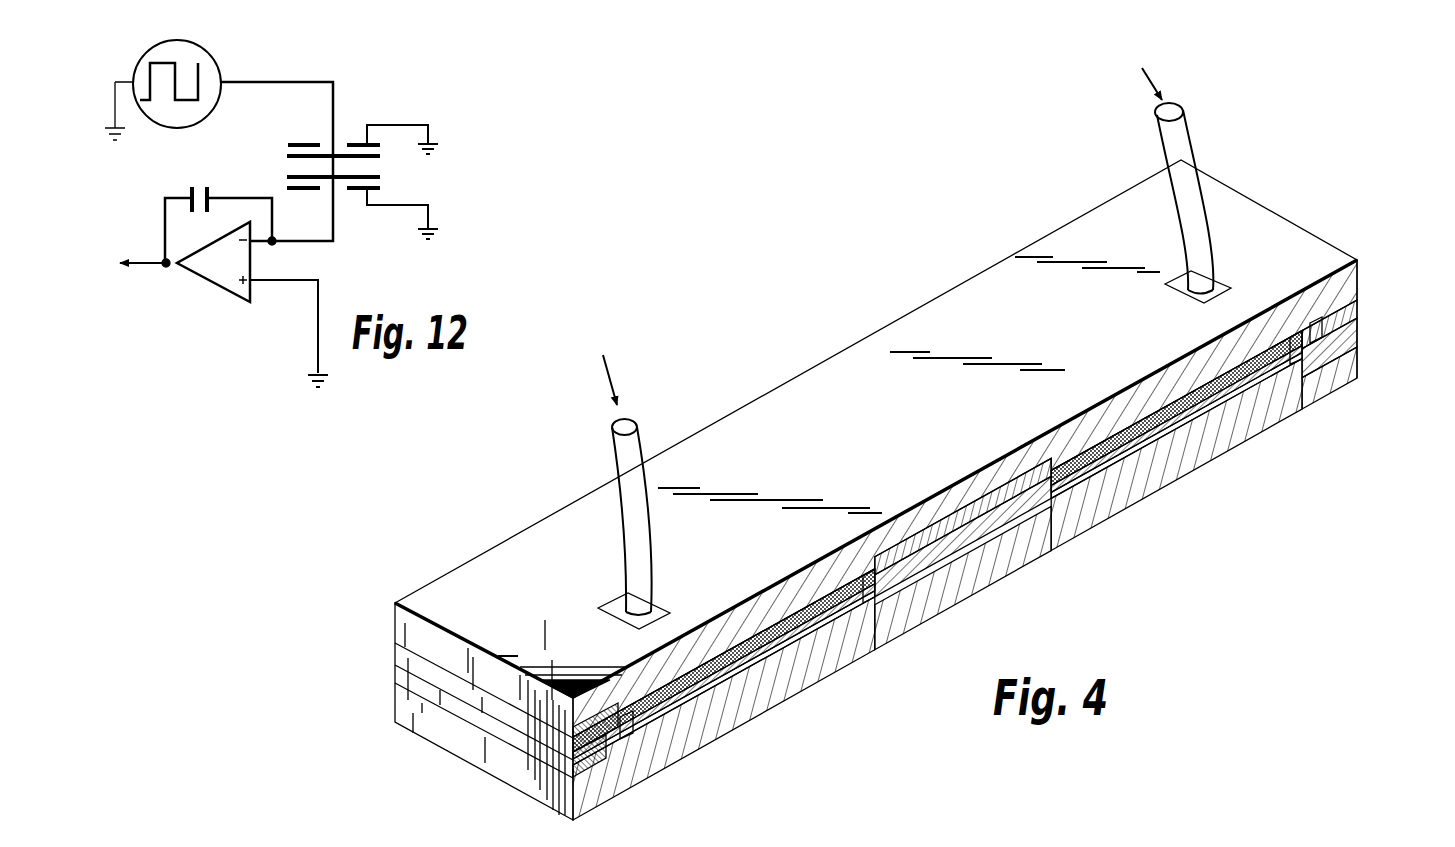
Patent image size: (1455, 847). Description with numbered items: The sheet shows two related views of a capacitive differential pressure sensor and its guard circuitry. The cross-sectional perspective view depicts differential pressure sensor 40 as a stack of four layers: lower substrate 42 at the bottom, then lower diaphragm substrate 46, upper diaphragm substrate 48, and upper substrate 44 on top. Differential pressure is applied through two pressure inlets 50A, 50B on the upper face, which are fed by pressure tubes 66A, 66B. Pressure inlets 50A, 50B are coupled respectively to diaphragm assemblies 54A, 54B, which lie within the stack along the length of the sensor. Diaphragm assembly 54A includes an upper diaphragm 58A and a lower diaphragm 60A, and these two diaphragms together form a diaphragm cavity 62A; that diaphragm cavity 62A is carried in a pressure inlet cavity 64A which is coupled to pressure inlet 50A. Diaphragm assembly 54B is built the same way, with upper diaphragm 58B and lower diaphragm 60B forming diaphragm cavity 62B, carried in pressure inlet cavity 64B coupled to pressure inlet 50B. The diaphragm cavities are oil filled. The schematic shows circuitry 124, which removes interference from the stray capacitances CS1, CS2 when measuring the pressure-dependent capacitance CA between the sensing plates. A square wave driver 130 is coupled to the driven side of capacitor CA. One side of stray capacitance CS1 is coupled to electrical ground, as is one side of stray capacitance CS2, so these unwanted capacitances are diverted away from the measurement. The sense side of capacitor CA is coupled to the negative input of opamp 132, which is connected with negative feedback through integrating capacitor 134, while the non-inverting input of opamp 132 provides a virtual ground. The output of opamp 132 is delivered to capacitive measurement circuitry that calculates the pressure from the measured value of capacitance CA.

In FIG. 4, the differential pressure sensor 40 is at (1272, 156).
In FIG. 4, the lower substrate 42 is at (1357, 358).
In FIG. 4, the upper substrate 44 is at (1358, 260).
In FIG. 4, the lower diaphragm substrate 46 is at (1357, 323).
In FIG. 4, the upper diaphragm substrate 48 is at (1357, 303).
In FIG. 4, the pressure inlet 50A is at (612, 604).
In FIG. 4, the pressure inlet 50B is at (1220, 283).
In FIG. 4, the diaphragm assembly 54A is at (812, 606).
In FIG. 4, the diaphragm assembly 54B is at (1240, 360).
In FIG. 4, the upper diaphragm 58A is at (782, 628).
In FIG. 4, the upper diaphragm 58B is at (1180, 410).
In FIG. 4, the lower diaphragm 60A is at (880, 608).
In FIG. 4, the lower diaphragm 60B is at (1243, 393).
In FIG. 4, the diaphragm cavity 62A is at (827, 630).
In FIG. 4, the diaphragm cavity 62B is at (1293, 367).
In FIG. 4, the pressure inlet cavity 64A is at (618, 747).
In FIG. 4, the pressure inlet cavity 64B is at (1320, 330).
In FIG. 4, the pressure tube 66A is at (617, 473).
In FIG. 4, the pressure tube 66B is at (1175, 130).
In FIG. 12, the circuitry 124 is at (362, 108).
In FIG. 12, the square wave driver 130 is at (158, 133).
In FIG. 12, the opamp 132 is at (213, 262).
In FIG. 12, the integrating capacitor 134 is at (192, 187).
In FIG. 12, the stray capacitance CS1 is at (287, 147).
In FIG. 12, the stray capacitance CS2 is at (377, 192).
In FIG. 12, the capacitance CA is at (292, 167).